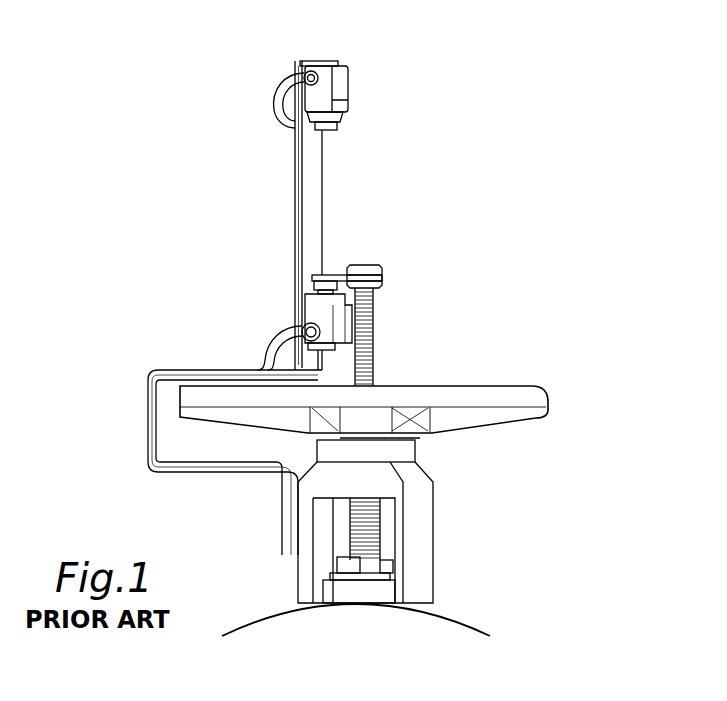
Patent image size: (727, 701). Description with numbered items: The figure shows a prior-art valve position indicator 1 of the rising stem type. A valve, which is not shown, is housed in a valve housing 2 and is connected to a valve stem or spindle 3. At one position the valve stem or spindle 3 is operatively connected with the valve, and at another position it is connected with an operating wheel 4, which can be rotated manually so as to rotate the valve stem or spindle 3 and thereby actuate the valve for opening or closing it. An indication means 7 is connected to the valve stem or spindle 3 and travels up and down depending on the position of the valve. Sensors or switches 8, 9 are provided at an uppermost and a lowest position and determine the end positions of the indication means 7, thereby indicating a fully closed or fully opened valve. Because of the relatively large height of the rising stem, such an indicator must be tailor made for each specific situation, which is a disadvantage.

The valve position indicator 1 is at (496, 233).
The valve housing 2 is at (497, 620).
The valve stem or spindle 3 is at (382, 333).
The operating wheel 4 is at (551, 402).
The indication means 7 is at (338, 260).
The sensor or switch 8 is at (359, 73).
The sensor or switch 9 is at (284, 293).